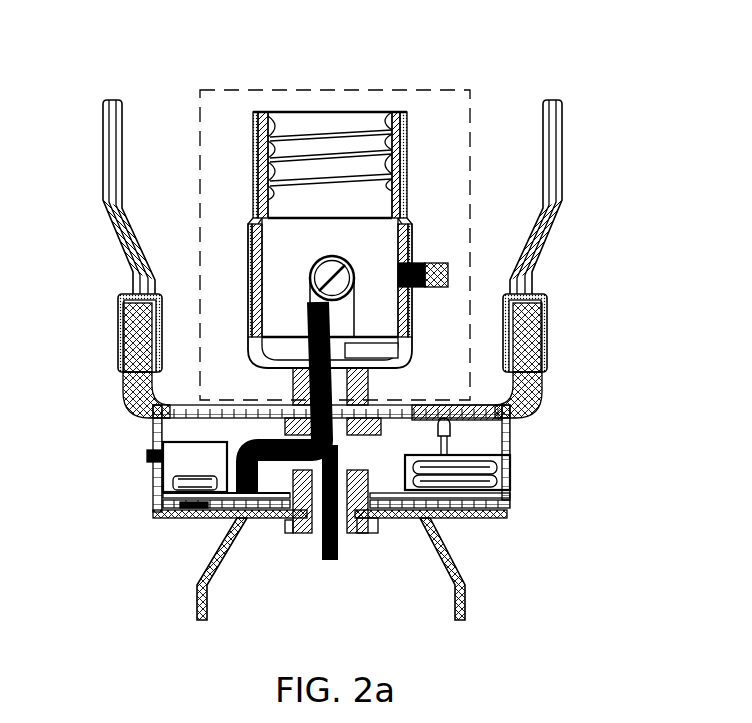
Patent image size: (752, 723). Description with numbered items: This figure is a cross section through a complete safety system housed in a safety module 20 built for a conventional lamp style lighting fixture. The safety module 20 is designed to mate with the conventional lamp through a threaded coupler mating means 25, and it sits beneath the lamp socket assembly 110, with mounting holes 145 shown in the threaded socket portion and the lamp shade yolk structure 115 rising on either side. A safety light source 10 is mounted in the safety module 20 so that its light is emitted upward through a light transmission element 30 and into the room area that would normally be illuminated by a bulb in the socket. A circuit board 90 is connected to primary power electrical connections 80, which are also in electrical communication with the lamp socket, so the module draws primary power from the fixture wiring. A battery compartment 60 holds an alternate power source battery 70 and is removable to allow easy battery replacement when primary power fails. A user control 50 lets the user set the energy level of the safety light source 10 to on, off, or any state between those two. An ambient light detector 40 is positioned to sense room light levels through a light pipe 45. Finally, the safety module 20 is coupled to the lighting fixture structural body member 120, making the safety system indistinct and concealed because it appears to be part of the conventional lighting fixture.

The safety light source 10 is at (445, 428).
The safety module 20 is at (153, 427).
The mating means 25 is at (357, 430).
The light transmission element 30 is at (467, 410).
The ambient light detector 40 is at (193, 506).
The light pipe 45 is at (193, 512).
The user control 50 is at (148, 455).
The battery compartment 60 is at (510, 480).
The alternate power source battery 70 is at (463, 465).
The primary power electrical connections 80 is at (322, 556).
The circuit board 90 is at (163, 485).
The lamp socket assembly 110 is at (380, 90).
The lamp shade yolk structure 115 is at (545, 230).
The lighting fixture structural body member 120 is at (197, 618).
The mounting holes 145 is at (287, 127).